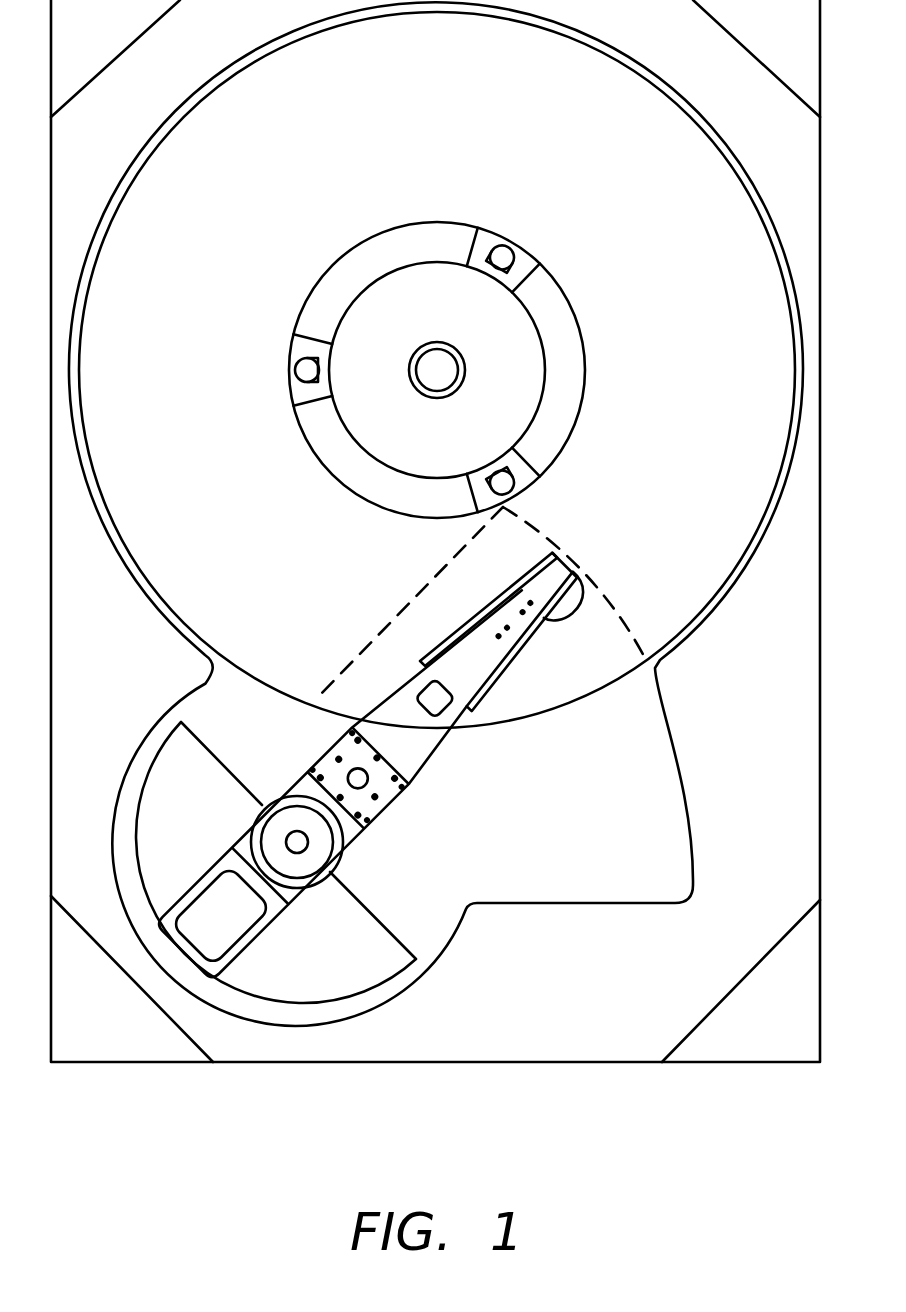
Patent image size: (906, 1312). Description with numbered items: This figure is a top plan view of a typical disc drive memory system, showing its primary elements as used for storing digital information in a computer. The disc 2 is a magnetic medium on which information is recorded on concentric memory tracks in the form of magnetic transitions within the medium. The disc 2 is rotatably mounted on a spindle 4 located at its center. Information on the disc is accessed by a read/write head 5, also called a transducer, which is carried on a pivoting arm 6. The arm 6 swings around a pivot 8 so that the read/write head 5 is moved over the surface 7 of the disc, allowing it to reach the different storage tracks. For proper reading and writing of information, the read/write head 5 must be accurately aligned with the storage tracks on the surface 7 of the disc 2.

The disc 2 is at (193, 422).
The spindle 4 is at (380, 363).
The read/write head 5 is at (571, 570).
The pivoting arm 6 is at (392, 836).
The surface of the disc 7 is at (617, 597).
The pivot 8 is at (303, 842).